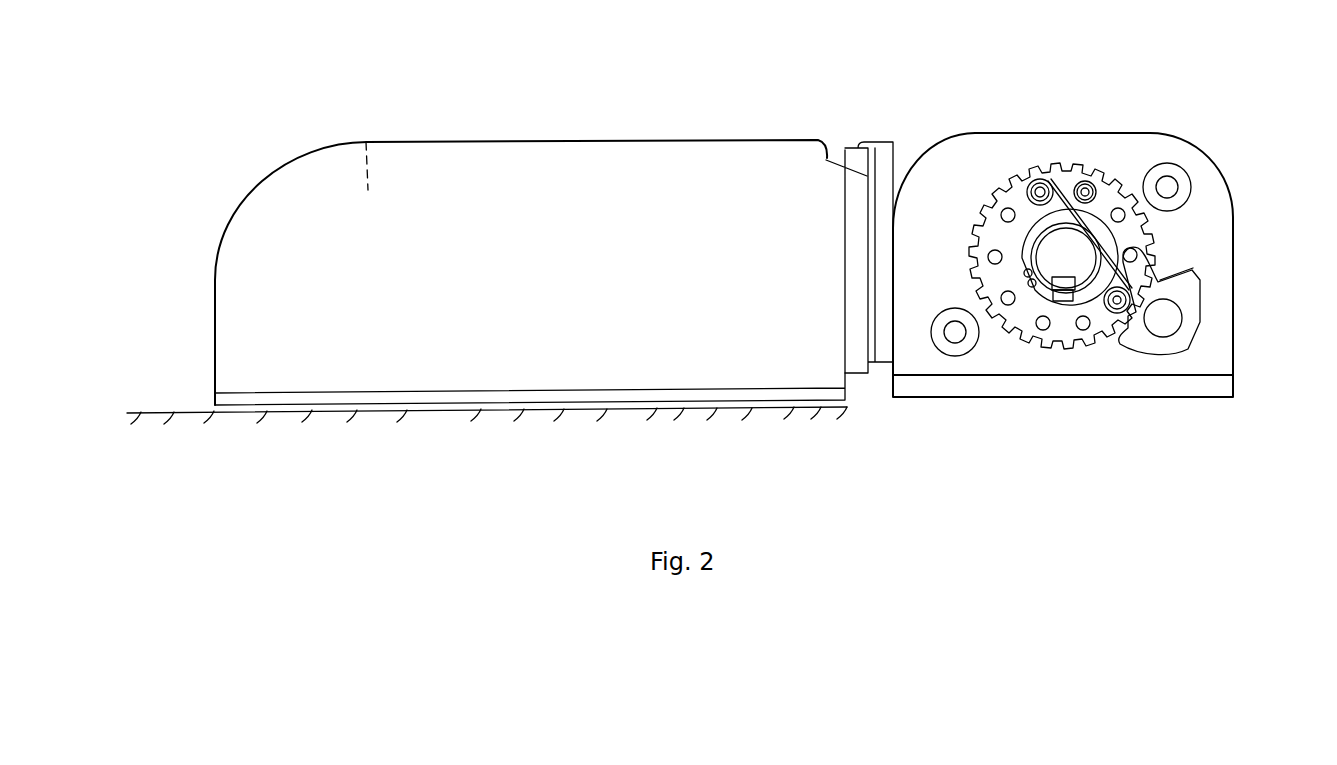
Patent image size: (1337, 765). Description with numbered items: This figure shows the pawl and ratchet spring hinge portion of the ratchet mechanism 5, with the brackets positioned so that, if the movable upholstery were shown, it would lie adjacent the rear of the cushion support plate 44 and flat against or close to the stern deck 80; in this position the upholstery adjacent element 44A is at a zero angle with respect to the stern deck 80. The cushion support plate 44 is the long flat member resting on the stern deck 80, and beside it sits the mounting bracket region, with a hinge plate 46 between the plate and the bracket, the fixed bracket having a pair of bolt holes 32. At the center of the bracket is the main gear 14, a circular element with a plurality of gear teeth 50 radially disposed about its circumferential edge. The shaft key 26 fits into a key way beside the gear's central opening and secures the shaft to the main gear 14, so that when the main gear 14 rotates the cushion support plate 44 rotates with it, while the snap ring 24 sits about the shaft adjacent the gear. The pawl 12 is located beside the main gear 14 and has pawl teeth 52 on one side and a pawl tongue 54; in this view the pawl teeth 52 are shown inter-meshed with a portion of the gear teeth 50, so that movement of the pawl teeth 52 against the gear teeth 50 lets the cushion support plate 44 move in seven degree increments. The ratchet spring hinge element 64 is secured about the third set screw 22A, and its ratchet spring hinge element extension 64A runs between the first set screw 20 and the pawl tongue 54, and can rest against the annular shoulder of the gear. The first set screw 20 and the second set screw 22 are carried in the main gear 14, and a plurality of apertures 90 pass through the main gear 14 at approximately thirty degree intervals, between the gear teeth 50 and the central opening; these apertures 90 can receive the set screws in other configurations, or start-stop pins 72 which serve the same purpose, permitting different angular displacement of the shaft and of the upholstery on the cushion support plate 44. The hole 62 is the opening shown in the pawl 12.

The ratchet mechanism 5 is at (857, 437).
The pawl 12 is at (1110, 214).
The main gear 14 is at (1123, 185).
The first set screw 20 is at (1030, 242).
The second set screw 22 is at (1130, 182).
The third set screw 22A is at (1040, 183).
The snap ring 24 is at (1047, 335).
The shaft key 26 is at (1066, 276).
The bolt holes 32 is at (1167, 187).
The cushion support plate 44 is at (597, 140).
The upholstery adjacent element 44A is at (366, 140).
The hinge plate 46 is at (822, 140).
The gear teeth 50 is at (995, 202).
The pawl teeth 52 is at (1124, 338).
The pawl tongue 54 is at (1220, 248).
The pawl hole 62 is at (1175, 317).
The ratchet spring hinge element 64 is at (1072, 180).
The ratchet spring hinge element extension 64A is at (1076, 190).
The start-stop pins 72 is at (1138, 250).
The stern deck 80 is at (163, 411).
The apertures 90 is at (1001, 218).